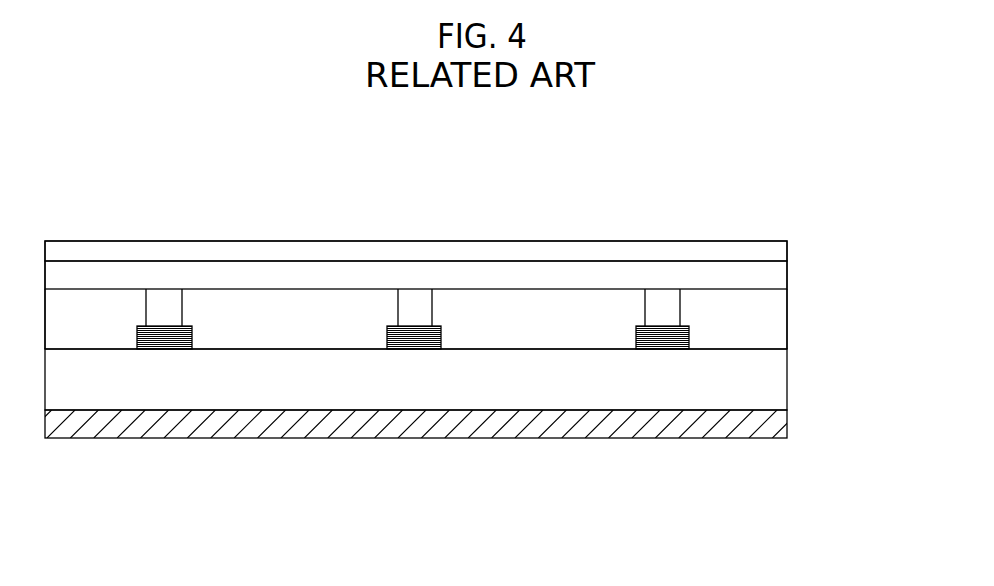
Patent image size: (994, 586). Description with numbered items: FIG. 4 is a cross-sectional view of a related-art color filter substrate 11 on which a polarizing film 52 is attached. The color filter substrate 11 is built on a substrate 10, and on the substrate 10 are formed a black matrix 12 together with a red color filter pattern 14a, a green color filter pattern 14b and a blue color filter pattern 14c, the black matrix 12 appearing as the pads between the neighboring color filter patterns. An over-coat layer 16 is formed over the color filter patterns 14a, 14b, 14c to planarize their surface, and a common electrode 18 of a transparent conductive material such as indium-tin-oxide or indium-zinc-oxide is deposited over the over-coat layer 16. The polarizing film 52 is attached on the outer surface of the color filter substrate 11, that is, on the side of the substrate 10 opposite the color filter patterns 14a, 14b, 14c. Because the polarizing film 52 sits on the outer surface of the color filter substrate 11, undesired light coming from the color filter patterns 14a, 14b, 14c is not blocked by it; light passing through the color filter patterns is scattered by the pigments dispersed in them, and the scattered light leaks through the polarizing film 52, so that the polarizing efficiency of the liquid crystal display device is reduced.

The substrate 10 is at (767, 375).
The color filter substrate 11 is at (813, 262).
The black matrix 12 is at (163, 332).
The red color filter pattern 14a is at (340, 305).
The green color filter pattern 14b is at (498, 305).
The blue color filter pattern 14c is at (117, 304).
The over-coat layer 16 is at (262, 276).
The common electrode 18 is at (603, 254).
The polarizing film 52 is at (688, 427).